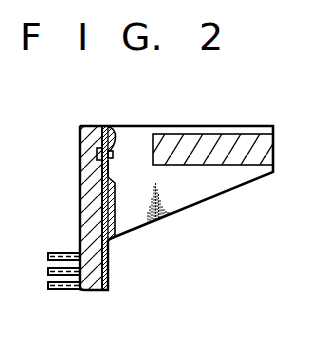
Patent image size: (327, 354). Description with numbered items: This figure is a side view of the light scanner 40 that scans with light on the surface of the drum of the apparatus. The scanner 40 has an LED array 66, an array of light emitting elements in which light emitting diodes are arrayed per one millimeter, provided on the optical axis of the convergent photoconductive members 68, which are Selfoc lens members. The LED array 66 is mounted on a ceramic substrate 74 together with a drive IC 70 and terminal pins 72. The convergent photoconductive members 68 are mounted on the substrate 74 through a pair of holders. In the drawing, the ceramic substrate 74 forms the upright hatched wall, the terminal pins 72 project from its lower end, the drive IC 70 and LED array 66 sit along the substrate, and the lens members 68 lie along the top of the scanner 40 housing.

The scanner 40 is at (202, 201).
The LED array 66 is at (109, 130).
The convergent photoconductive members 68 is at (274, 128).
The drive IC 70 is at (111, 222).
The terminal pins 72 is at (62, 290).
The ceramic substrate 74 is at (94, 190).